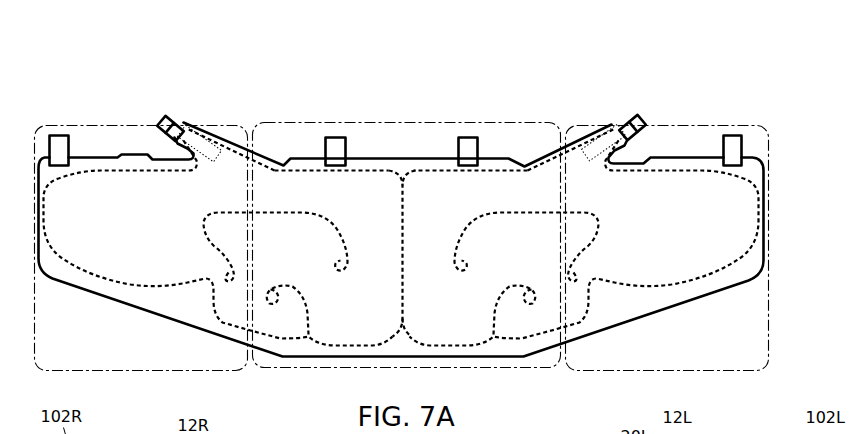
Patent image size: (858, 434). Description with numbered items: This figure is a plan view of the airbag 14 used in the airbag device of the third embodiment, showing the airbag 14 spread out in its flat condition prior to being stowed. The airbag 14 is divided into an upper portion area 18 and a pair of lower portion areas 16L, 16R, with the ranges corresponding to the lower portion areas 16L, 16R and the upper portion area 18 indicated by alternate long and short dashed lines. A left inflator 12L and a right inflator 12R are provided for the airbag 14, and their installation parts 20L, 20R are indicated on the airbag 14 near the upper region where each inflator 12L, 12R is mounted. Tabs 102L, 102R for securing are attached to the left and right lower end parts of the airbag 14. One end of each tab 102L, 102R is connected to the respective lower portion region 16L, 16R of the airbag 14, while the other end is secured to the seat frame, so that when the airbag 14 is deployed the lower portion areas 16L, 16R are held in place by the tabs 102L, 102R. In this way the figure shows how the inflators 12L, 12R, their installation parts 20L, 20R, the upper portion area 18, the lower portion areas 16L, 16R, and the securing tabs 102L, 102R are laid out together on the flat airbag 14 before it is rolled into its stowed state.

The airbag 14 is at (683, 154).
The upper portion area 18 is at (400, 158).
The inflator 12R is at (164, 117).
The inflator 12L is at (637, 113).
The installation part of the inflator 20R is at (192, 123).
The installation part of the inflator 20L is at (608, 119).
The lower portion area 16R is at (95, 170).
The lower portion area 16L is at (735, 205).
The tab 102R is at (52, 133).
The tab 102L is at (732, 133).